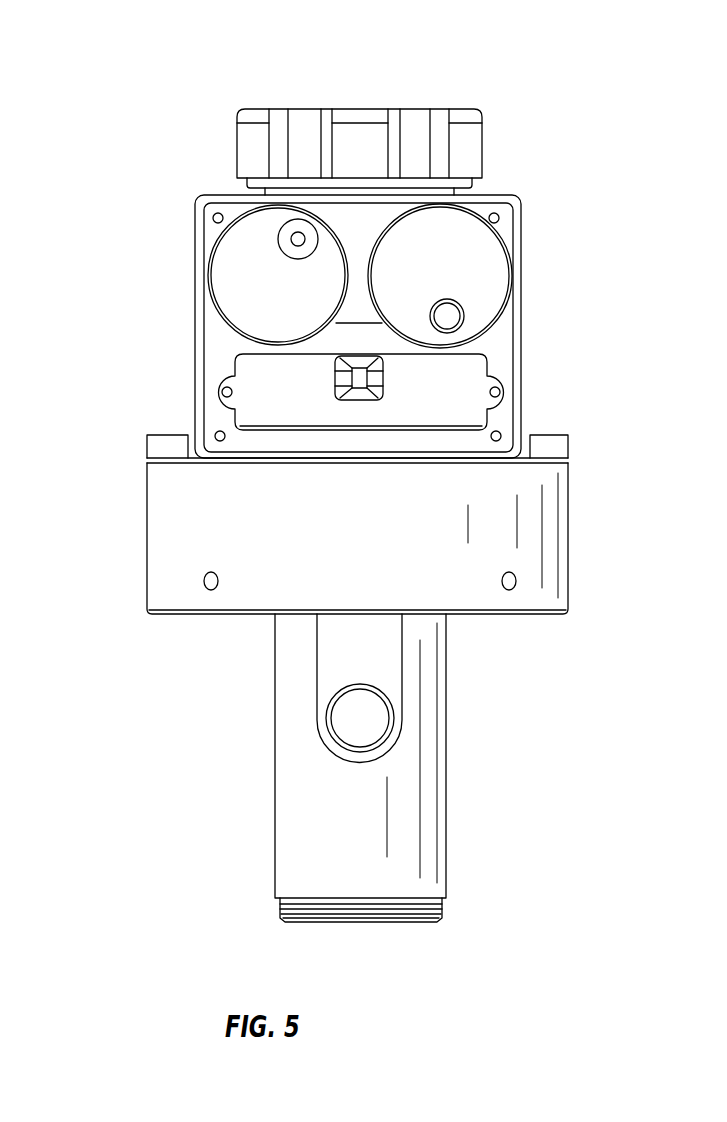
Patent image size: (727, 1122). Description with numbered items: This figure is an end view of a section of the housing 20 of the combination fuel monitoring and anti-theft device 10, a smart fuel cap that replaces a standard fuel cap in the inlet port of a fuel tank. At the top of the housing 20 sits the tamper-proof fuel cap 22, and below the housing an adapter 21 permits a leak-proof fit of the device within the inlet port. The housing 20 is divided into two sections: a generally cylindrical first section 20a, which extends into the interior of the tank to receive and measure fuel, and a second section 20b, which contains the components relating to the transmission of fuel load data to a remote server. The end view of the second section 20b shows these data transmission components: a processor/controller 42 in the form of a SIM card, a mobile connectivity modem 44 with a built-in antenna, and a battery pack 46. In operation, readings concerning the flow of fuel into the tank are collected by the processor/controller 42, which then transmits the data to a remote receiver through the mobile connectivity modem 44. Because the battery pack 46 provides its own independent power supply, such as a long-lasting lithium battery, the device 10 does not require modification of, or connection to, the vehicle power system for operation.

The combination fuel monitoring and anti-theft device 10 is at (591, 100).
The housing 20 is at (524, 191).
The first section 20a is at (446, 735).
The second section 20b is at (522, 303).
The adapter 21 is at (187, 532).
The tamper-proof fuel cap 22 is at (237, 147).
The processor/controller (SIM card) 42 is at (334, 397).
The mobile connectivity modem 44 is at (253, 379).
The battery pack 46 is at (237, 298).